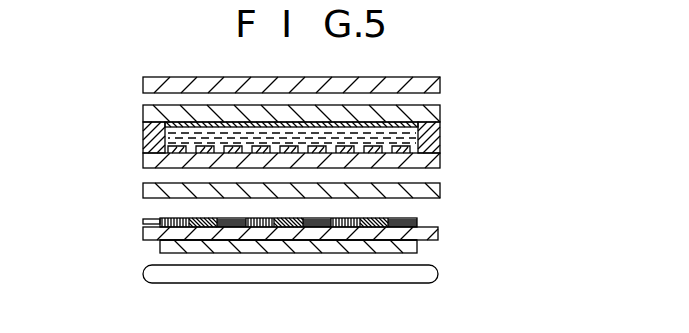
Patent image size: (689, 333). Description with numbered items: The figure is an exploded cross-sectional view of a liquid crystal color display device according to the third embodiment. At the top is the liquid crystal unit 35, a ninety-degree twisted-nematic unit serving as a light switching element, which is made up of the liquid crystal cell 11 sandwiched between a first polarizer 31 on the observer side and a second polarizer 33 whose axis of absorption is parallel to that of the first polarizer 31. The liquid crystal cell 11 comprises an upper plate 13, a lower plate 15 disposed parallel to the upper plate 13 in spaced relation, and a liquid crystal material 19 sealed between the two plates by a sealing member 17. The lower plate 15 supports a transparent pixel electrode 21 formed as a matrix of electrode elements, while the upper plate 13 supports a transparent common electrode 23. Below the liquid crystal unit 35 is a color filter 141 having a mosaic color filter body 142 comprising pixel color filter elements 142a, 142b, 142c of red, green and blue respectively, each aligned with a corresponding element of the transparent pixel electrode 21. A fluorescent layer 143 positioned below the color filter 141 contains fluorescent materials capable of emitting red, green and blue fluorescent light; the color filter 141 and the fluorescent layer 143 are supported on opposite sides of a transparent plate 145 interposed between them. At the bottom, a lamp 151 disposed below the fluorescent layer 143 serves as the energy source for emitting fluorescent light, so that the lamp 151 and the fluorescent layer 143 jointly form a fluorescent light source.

The liquid crystal cell 11 is at (323, 126).
The upper plate 13 is at (440, 114).
The lower plate 15 is at (319, 163).
The sealing member 17 is at (143, 128).
The liquid crystal material 19 is at (418, 138).
The transparent pixel electrode 21 is at (166, 150).
The transparent common electrode 23 is at (172, 123).
The first polarizer 31 is at (440, 86).
The second polarizer 33 is at (438, 190).
The liquid crystal unit 35 is at (345, 138).
The color filter 141 is at (417, 222).
The mosaic color filter body 142 is at (222, 216).
The pixel color filter element 142a is at (160, 226).
The pixel color filter element 142b is at (143, 221).
The pixel color filter element 142c is at (214, 217).
The fluorescent layer 143 is at (417, 246).
The transparent plate 145 is at (160, 241).
The lamp 151 is at (435, 274).